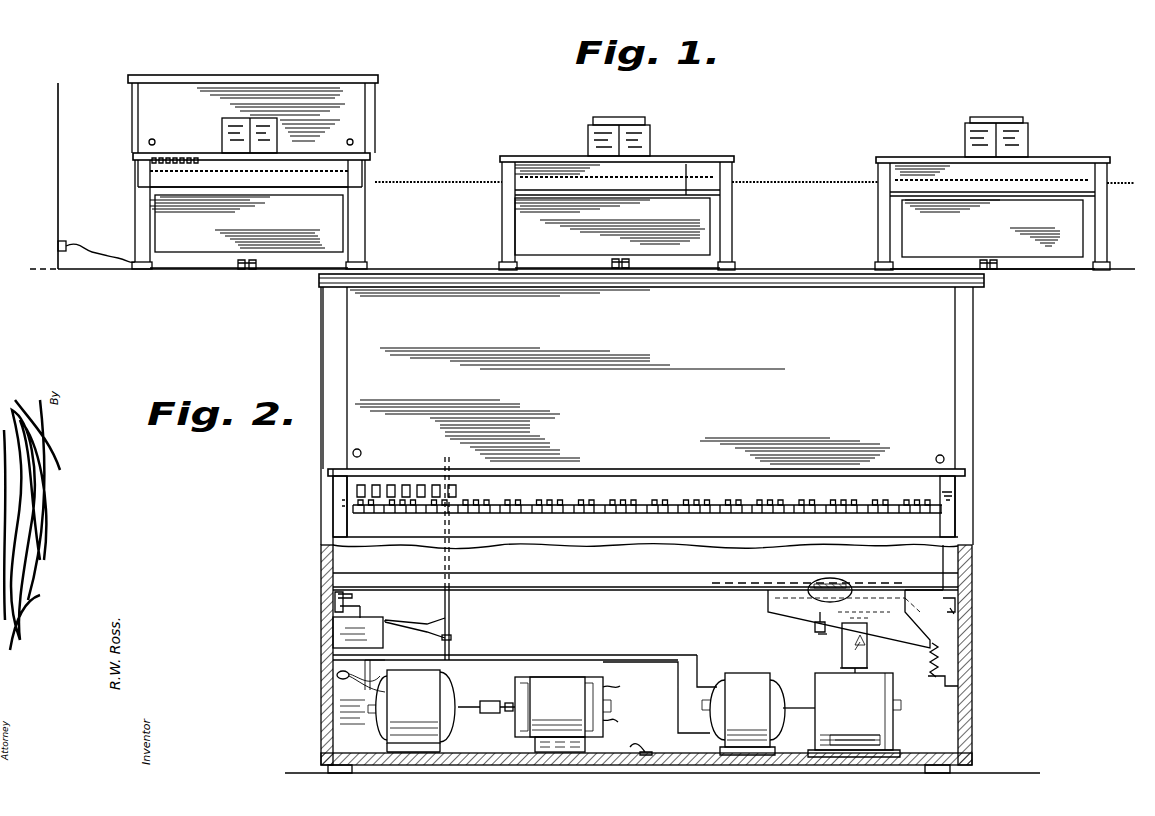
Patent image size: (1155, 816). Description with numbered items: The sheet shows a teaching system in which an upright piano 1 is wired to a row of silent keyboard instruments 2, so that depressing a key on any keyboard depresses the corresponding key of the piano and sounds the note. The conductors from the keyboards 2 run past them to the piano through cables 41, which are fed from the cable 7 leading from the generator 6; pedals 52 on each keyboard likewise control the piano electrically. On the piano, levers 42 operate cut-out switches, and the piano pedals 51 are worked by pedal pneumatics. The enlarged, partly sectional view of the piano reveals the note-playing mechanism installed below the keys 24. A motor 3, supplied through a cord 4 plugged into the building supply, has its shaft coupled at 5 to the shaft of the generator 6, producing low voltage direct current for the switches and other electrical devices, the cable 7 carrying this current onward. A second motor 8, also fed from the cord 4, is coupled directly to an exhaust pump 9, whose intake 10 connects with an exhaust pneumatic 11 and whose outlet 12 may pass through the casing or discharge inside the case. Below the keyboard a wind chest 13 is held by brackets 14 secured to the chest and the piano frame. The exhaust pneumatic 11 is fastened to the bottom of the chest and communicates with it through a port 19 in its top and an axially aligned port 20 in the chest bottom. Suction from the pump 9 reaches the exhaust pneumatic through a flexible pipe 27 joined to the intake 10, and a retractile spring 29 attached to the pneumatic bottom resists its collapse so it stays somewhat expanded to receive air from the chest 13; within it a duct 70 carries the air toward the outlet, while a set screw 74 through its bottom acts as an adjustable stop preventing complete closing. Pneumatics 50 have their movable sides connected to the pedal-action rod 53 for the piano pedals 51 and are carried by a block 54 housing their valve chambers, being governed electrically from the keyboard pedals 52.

In FIG. 1, the upright piano 1 is at (253, 160).
In FIG. 2, the upright piano 1 is at (662, 523).
In FIG. 1, the silent keyboard instruments 2 is at (552, 162).
In FIG. 2, the motor 3 is at (827, 497).
In FIG. 1, the cord 4 is at (88, 244).
In FIG. 2, the cord 4 is at (340, 677).
In FIG. 2, the coupling 5 is at (488, 700).
In FIG. 2, the generator 6 is at (563, 714).
In FIG. 1, the cable 7 is at (684, 200).
In FIG. 2, the cable 7 is at (616, 690).
In FIG. 2, the second motor 8 is at (752, 680).
In FIG. 2, the exhaust pump 9 is at (868, 697).
In FIG. 2, the intake 10 is at (868, 670).
In FIG. 2, the exhaust pneumatic 11 is at (768, 610).
In FIG. 2, the outlet 12 is at (893, 733).
In FIG. 2, the wind chest 13 is at (930, 564).
In FIG. 2, the brackets 14 is at (333, 594).
In FIG. 2, the port 19 is at (830, 600).
In FIG. 2, the port 20 is at (835, 583).
In FIG. 2, the keys 24 is at (643, 505).
In FIG. 2, the flexible pipe 27 is at (867, 662).
In FIG. 2, the retractile spring 29 is at (958, 663).
In FIG. 1, the cables 41 is at (436, 178).
In FIG. 1, the levers 42 is at (186, 155).
In FIG. 2, the levers 42 is at (420, 485).
In FIG. 2, the pneumatics 50 is at (450, 616).
In FIG. 1, the pedals 51 is at (252, 270).
In FIG. 2, the pedals 51 is at (652, 755).
In FIG. 1, the pedals 52 is at (618, 264).
In FIG. 2, the pedal-action rod 53 is at (455, 632).
In FIG. 2, the block 54 is at (340, 626).
In FIG. 2, the duct 70 is at (878, 595).
In FIG. 2, the set screw 74 is at (818, 636).